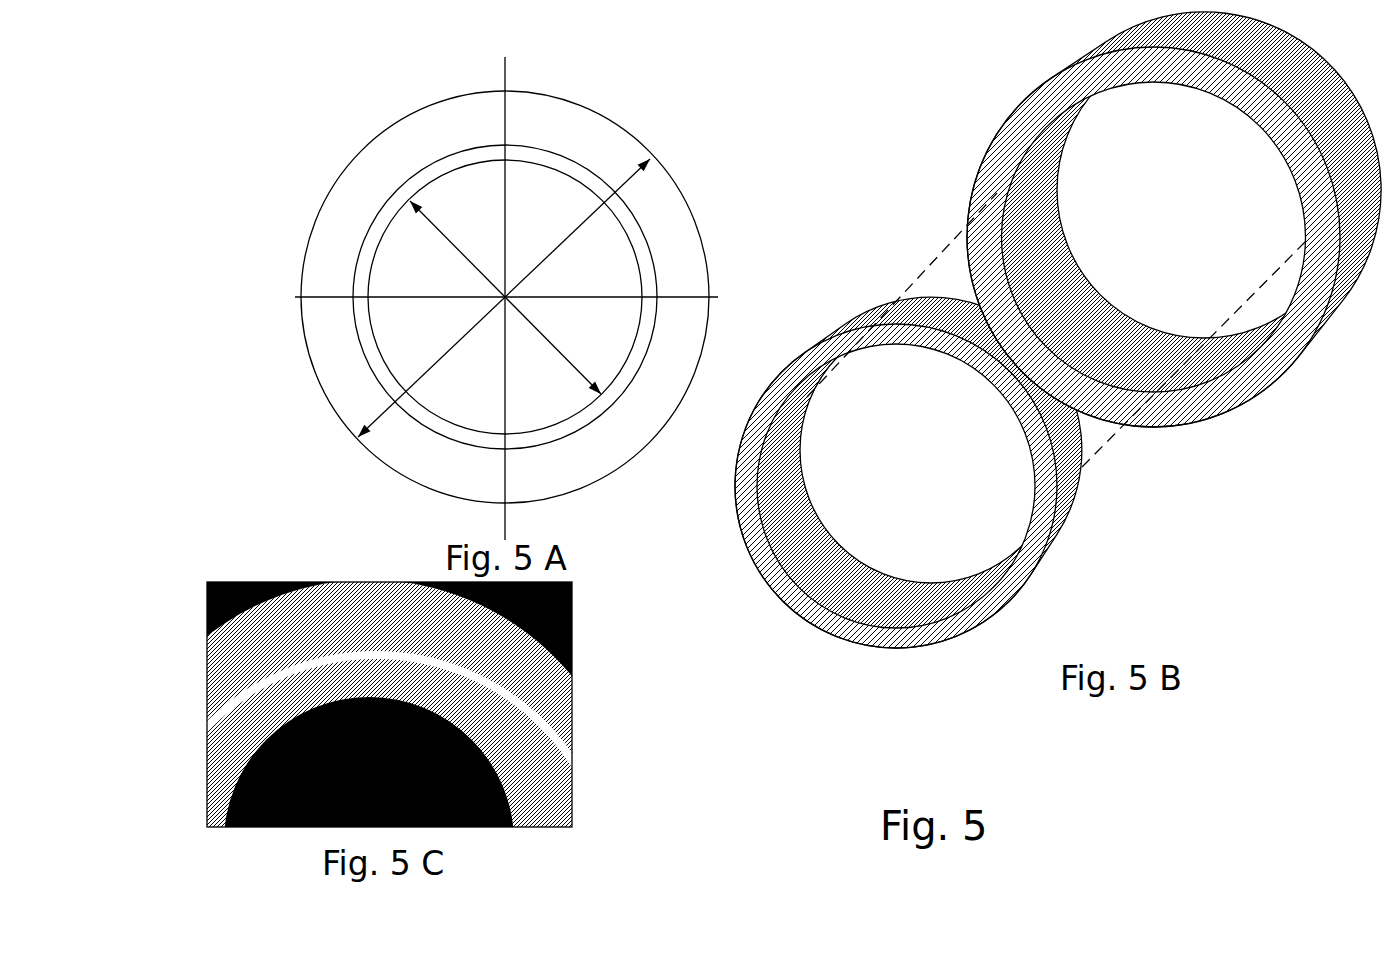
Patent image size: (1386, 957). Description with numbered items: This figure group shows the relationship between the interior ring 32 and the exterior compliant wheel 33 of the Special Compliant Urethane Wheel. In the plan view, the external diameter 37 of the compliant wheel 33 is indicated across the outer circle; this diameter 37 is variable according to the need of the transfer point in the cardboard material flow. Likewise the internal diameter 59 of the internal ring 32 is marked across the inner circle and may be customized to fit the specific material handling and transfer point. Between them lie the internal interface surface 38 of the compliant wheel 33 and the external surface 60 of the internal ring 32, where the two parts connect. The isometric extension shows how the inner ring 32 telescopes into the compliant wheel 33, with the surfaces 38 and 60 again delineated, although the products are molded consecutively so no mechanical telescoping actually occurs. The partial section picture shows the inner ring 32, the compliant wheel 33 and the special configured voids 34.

In FIG. 5A, the interior ring 32 is at (643, 270).
In FIG. 5B, the interior ring 32 is at (1024, 472).
In FIG. 5C, the interior ring 32 is at (542, 840).
In FIG. 5A, the exterior wheel 33 is at (555, 271).
In FIG. 5B, the exterior wheel 33 is at (1174, 245).
In FIG. 5C, the exterior wheel 33 is at (445, 768).
In FIG. 5A, the special configured voids 34 is at (640, 322).
In FIG. 5C, the special configured voids 34 is at (543, 678).
In FIG. 5A, the external diameter 37 is at (578, 227).
In FIG. 5A, the internal interface surface 38 is at (600, 297).
In FIG. 5B, the internal interface surface 38 is at (1205, 377).
In FIG. 5C, the internal interface surface 38 is at (421, 773).
In FIG. 5A, the internal diameter 59 is at (562, 362).
In FIG. 5A, the external surface 60 is at (627, 208).
In FIG. 5B, the external surface 60 is at (1058, 502).
In FIG. 5C, the external surface 60 is at (448, 670).